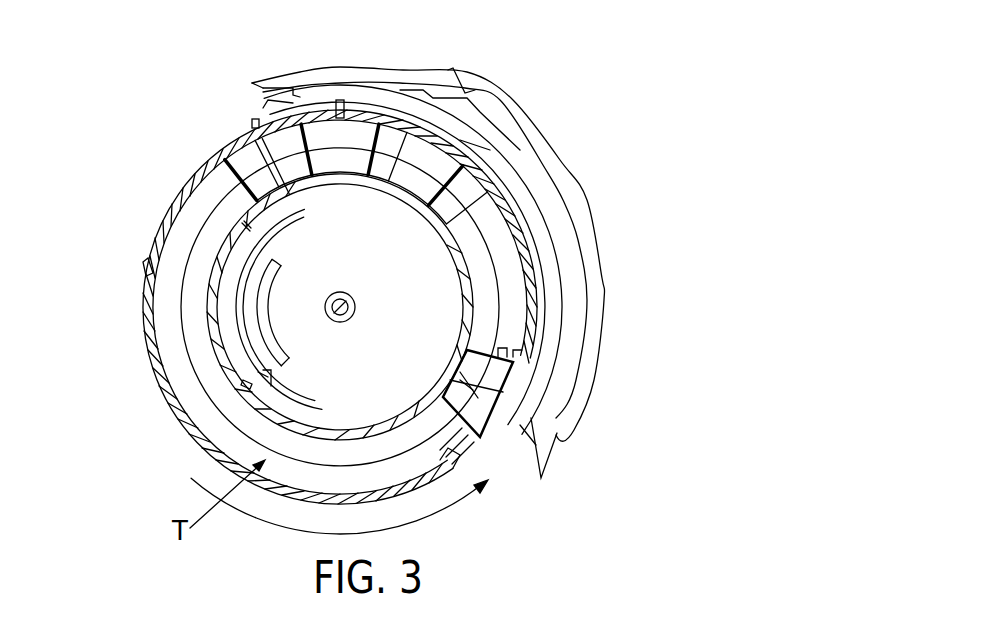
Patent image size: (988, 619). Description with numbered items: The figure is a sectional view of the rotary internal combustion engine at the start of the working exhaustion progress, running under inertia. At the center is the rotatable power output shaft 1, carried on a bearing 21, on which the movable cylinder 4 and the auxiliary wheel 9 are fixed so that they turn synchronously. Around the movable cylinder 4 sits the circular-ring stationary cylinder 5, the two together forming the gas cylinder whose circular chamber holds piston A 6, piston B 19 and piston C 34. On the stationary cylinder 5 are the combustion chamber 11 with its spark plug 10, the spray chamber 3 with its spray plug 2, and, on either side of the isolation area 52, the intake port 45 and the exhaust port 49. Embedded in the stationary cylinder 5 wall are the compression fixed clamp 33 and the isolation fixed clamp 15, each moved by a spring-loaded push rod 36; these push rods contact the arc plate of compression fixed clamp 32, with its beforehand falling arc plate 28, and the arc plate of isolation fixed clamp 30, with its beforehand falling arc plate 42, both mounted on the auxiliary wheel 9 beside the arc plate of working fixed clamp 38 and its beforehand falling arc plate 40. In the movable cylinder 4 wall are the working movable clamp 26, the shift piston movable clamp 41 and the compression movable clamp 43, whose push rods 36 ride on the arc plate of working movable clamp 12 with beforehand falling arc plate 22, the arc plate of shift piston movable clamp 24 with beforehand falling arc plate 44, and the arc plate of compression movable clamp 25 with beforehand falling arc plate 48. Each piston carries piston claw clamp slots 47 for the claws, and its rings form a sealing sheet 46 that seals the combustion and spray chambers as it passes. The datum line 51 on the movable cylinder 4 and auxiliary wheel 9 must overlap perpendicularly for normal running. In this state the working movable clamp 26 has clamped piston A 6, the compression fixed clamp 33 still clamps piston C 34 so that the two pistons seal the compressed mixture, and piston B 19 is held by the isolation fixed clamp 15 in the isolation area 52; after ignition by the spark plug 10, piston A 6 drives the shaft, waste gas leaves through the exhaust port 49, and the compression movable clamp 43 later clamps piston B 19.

The power output shaft 1 is at (330, 321).
The spray plug 2 is at (148, 268).
The spray chamber 3 is at (150, 293).
The movable cylinder 4 is at (480, 270).
The stationary cylinder 5 is at (168, 312).
The piston A 6 is at (232, 148).
The auxiliary wheel 9 is at (392, 227).
The spark plug 10 is at (368, 125).
The combustion chamber 11 is at (402, 130).
The arc plate of working movable clamp 12 is at (535, 203).
The isolation fixed clamp 15 is at (556, 437).
The piston B 19 is at (497, 373).
The bearing 21 is at (248, 390).
The beforehand falling arc plate of working movable clamp 22 is at (282, 88).
The arc plate of shift piston movable clamp 24 is at (456, 70).
The arc plate of compression movable clamp 25 is at (582, 240).
The working movable clamp 26 is at (340, 100).
The beforehand falling arc plate of compression fixed clamp 28 is at (248, 258).
The arc plate of isolation fixed clamp 30 is at (247, 228).
The arc plate of compression fixed clamp 32 is at (279, 277).
The compression fixed clamp 33 is at (495, 95).
The piston C 34 is at (478, 137).
The push rod 36 is at (255, 120).
The arc plate of working fixed clamp 38 is at (327, 314).
The beforehand falling arc plate of working fixed clamp 40 is at (272, 372).
The shift piston movable clamp 41 is at (262, 385).
The beforehand falling arc plate of isolation fixed clamp 42 is at (238, 142).
The compression movable clamp 43 is at (233, 181).
The beforehand falling arc plate of shift piston movable clamp 44 is at (483, 80).
The intake port 45 is at (530, 350).
The sealing sheet of spray chamber 46 is at (521, 362).
The piston claw clamp slot 47 is at (482, 386).
The beforehand falling arc plate of compression movable clamp 48 is at (485, 410).
The exhaust port 49 is at (470, 440).
The datum line 51 is at (247, 160).
The isolation area 52 is at (546, 452).